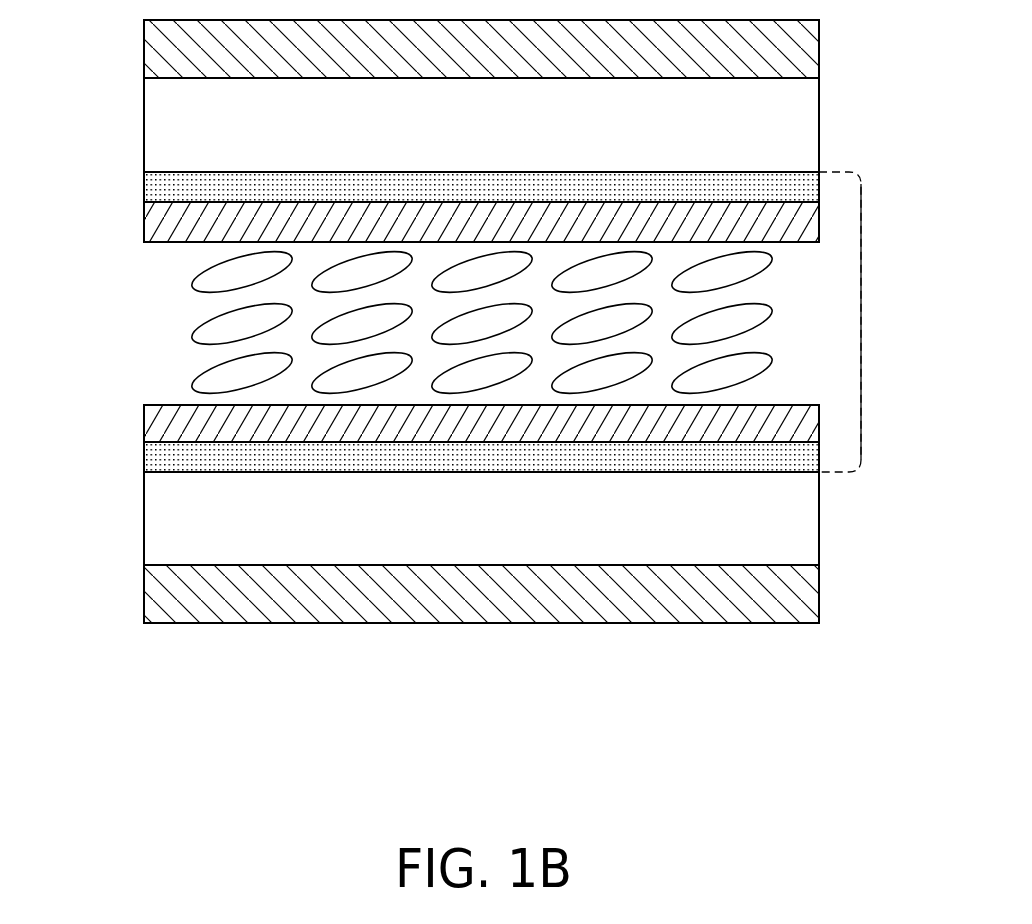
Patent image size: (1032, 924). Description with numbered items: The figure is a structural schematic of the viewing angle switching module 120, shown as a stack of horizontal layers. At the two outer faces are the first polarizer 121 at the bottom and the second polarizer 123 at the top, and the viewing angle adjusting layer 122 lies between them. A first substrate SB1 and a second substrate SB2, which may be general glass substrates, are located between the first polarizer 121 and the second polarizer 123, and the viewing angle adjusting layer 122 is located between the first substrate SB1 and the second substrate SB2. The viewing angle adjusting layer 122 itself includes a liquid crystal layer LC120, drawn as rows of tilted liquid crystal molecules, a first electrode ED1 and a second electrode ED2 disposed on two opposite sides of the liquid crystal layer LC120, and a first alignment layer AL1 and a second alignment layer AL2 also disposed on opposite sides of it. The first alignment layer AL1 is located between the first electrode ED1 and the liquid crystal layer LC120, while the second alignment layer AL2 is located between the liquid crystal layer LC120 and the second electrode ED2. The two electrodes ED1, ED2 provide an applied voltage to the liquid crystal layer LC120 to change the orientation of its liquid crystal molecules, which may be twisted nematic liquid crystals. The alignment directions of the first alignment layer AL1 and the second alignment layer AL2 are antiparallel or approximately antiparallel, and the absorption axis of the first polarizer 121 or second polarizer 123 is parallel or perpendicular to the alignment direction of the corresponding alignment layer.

The viewing angle switching module 120 is at (473, 394).
The first polarizer 121 is at (819, 592).
The viewing angle adjusting layer 122 is at (861, 312).
The second polarizer 123 is at (819, 47).
The first substrate SB1 is at (819, 515).
The second substrate SB2 is at (819, 123).
The first electrode ED1 is at (144, 458).
The second electrode ED2 is at (144, 192).
The first alignment layer AL1 is at (144, 424).
The second alignment layer AL2 is at (144, 224).
The liquid crystal layer LC120 is at (146, 326).